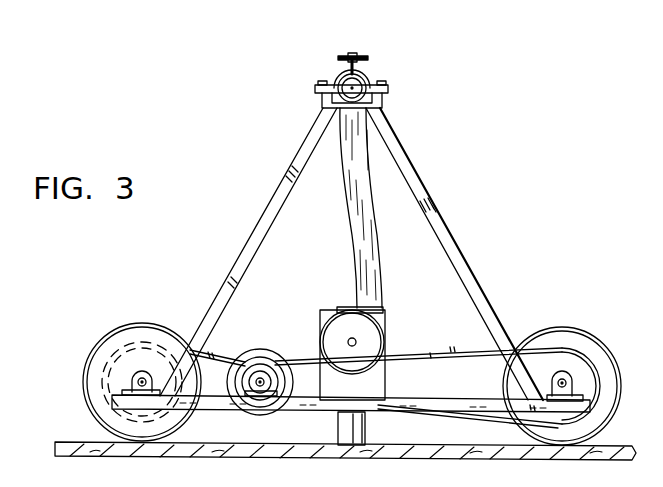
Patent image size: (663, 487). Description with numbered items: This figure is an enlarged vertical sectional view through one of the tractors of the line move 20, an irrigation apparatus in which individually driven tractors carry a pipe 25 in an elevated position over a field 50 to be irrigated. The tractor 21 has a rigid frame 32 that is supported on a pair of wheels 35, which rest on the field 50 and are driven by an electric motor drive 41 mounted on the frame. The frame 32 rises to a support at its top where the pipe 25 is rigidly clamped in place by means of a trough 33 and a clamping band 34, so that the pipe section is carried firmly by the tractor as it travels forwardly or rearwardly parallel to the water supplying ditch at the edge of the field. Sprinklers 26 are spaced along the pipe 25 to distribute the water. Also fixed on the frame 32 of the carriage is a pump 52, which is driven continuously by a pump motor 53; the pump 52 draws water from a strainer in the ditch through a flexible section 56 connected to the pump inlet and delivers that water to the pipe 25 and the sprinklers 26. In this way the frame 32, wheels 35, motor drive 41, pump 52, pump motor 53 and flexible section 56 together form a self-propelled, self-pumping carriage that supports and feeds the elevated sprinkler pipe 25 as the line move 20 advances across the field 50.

The line move 20 is at (351, 254).
The tractor 21 is at (462, 245).
The pipe 25 is at (362, 76).
The sprinklers 26 is at (356, 58).
The rigid frame 32 is at (473, 286).
The trough 33 is at (382, 100).
The clamping band 34 is at (337, 78).
The wheels 35 is at (143, 327).
The electric motor drive 41 is at (262, 350).
The field 50 is at (312, 447).
The pump 52 is at (380, 313).
The pump motor 53 is at (327, 340).
The flexible section 56 is at (364, 431).